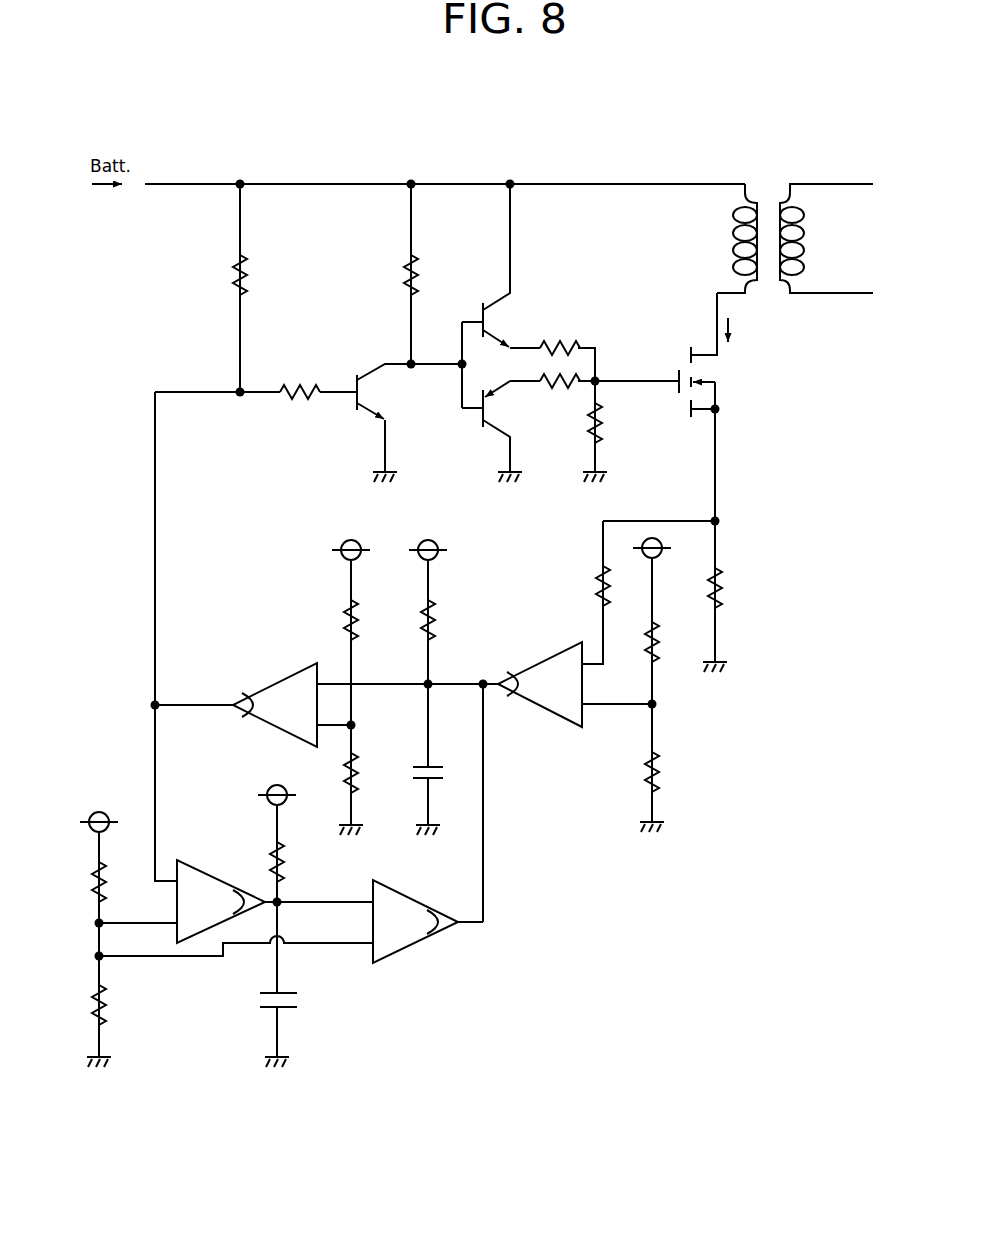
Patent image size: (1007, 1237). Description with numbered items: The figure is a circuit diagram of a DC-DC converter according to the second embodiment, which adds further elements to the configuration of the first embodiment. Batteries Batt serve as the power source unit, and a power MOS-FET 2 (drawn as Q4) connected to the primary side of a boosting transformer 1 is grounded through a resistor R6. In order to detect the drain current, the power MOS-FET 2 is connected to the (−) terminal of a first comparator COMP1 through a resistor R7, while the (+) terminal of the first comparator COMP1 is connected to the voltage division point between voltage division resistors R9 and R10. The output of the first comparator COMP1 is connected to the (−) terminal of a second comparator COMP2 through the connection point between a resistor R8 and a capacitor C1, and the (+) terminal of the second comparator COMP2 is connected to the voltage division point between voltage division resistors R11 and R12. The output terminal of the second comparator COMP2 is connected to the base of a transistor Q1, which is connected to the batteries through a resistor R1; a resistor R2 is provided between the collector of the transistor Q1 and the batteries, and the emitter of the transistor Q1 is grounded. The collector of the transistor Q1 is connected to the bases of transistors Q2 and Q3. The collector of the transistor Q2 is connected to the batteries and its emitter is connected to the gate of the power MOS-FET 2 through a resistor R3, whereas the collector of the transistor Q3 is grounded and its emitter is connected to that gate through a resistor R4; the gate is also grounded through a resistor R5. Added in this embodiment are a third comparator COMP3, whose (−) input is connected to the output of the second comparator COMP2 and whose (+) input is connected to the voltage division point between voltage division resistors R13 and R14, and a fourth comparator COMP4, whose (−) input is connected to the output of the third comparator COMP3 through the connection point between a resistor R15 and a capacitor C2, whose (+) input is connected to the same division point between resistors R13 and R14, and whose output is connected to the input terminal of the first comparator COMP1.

The boosting transformer 1 is at (764, 183).
The power MOS-FET 2 is at (725, 355).
The resistor R1 is at (223, 288).
The resistor R2 is at (395, 274).
The resistor R3 is at (567, 350).
The resistor R4 is at (560, 394).
The resistor R5 is at (606, 431).
The resistor R6 is at (726, 620).
The resistor R7 is at (616, 586).
The resistor R8 is at (438, 590).
The voltage division resistor R9 is at (660, 600).
The voltage division resistor R10 is at (669, 792).
The voltage division resistor R11 is at (366, 590).
The voltage division resistor R12 is at (369, 794).
The voltage division resistor R13 is at (113, 857).
The voltage division resistor R14 is at (117, 1026).
The resistor R15 is at (291, 633).
The capacitor C1 is at (443, 798).
The capacitor C2 is at (262, 1030).
The transistor Q1 is at (404, 412).
The transistor Q2 is at (494, 266).
The transistor Q3 is at (494, 431).
The MOSFET Q4 is at (686, 355).
The first comparator COMP1 is at (532, 679).
The second comparator COMP2 is at (269, 698).
The third comparator COMP3 is at (221, 895).
The fourth comparator COMP4 is at (415, 914).